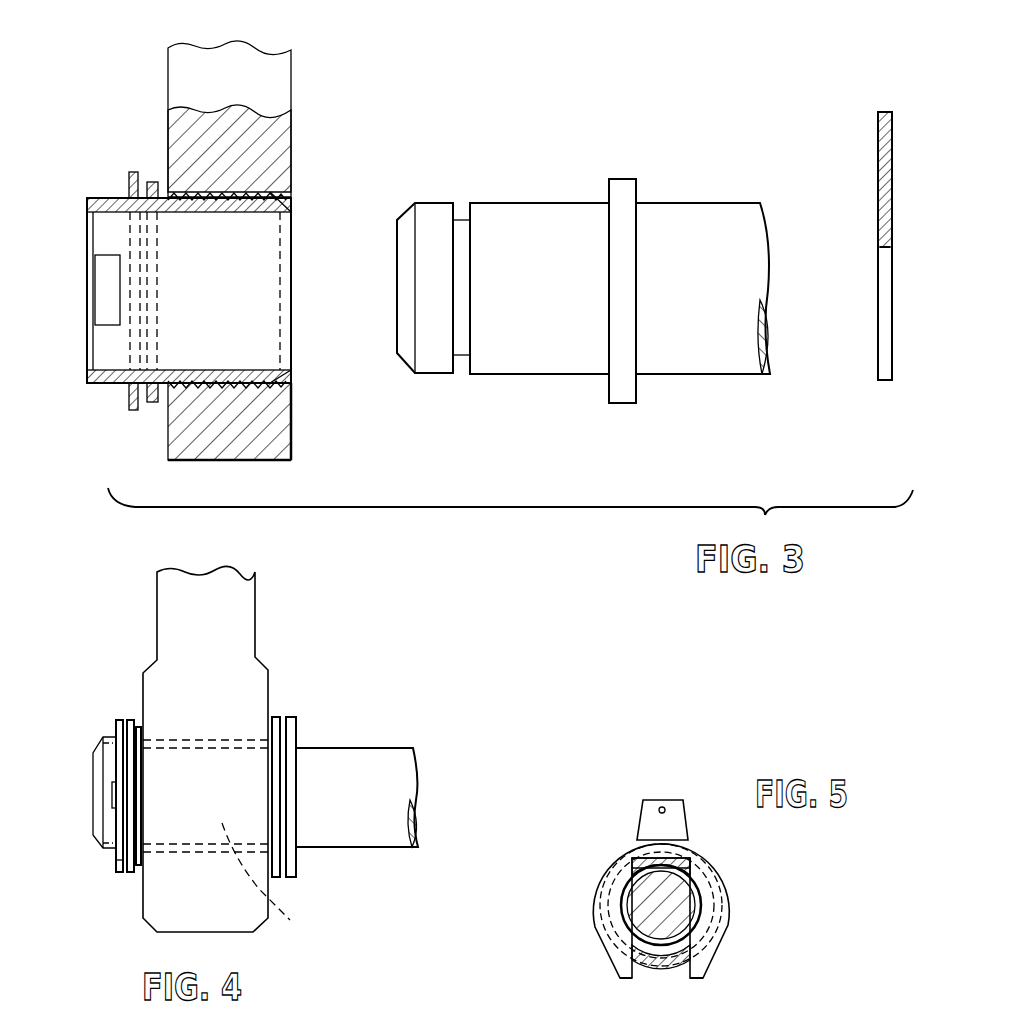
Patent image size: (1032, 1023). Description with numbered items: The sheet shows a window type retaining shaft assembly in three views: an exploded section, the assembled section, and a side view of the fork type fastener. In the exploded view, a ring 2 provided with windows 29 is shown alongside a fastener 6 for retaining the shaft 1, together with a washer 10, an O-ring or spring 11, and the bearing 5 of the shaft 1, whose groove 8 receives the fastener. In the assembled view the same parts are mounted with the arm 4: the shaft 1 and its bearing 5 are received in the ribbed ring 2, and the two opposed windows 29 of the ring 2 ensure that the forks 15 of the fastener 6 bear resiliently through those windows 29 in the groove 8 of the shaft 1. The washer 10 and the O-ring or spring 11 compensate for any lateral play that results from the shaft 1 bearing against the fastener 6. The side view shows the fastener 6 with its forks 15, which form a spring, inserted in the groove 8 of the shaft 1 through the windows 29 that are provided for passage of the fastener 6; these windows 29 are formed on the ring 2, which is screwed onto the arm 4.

In FIG. 3, the shaft 1 is at (712, 345).
In FIG. 4, the shaft 1 is at (345, 765).
In FIG. 5, the shaft 1 is at (648, 897).
In FIG. 3, the ring 2 is at (291, 205).
In FIG. 4, the ring 2 is at (278, 717).
In FIG. 5, the ring 2 is at (665, 860).
In FIG. 3, the arm 4 is at (270, 430).
In FIG. 4, the arm 4 is at (222, 652).
In FIG. 3, the bearing 5 is at (555, 345).
In FIG. 4, the bearing 5 is at (262, 879).
In FIG. 5, the bearing 5 is at (680, 900).
In FIG. 3, the fastener 6 is at (882, 165).
In FIG. 4, the fastener 6 is at (117, 723).
In FIG. 5, the fastener 6 is at (672, 800).
In FIG. 3, the groove 8 is at (455, 380).
In FIG. 4, the groove 8 is at (104, 792).
In FIG. 5, the groove 8 is at (690, 868).
In FIG. 3, the washer 10 is at (132, 410).
In FIG. 4, the washer 10 is at (128, 715).
In FIG. 3, the O-ring or spring 11 is at (152, 402).
In FIG. 4, the O-ring or spring 11 is at (138, 715).
In FIG. 3, the forks 15 is at (880, 352).
In FIG. 4, the forks 15 is at (117, 870).
In FIG. 5, the forks 15 is at (622, 978).
In FIG. 3, the windows 29 is at (95, 280).
In FIG. 4, the windows 29 is at (112, 795).
In FIG. 5, the windows 29 is at (600, 937).